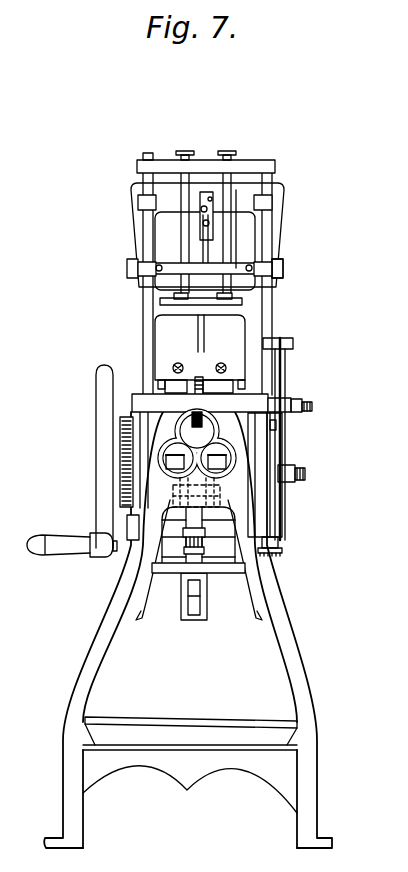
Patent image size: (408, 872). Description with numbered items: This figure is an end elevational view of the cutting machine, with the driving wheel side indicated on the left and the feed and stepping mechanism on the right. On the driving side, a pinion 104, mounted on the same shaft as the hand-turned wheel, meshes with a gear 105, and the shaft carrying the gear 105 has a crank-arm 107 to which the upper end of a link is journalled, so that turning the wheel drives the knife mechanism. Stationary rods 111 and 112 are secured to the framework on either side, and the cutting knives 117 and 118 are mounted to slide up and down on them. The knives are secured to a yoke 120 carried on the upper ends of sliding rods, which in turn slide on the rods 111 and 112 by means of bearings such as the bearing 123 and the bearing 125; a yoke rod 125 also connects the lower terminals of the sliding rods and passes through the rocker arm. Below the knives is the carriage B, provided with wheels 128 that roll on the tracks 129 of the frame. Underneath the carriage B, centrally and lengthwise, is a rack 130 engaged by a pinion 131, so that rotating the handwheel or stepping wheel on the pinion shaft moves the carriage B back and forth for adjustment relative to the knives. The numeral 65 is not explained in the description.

The yoke 120 is at (131, 185).
The bearing / yoke rod 125 is at (127, 267).
The cutting knife 118 is at (203, 237).
The cutting knife 117 is at (237, 268).
The bearing 123 is at (277, 263).
The rod 112 is at (141, 303).
The rod 111 is at (266, 308).
The plate 65 is at (205, 318).
The carriage B is at (160, 352).
The wheels 128 is at (162, 377).
The rack 130 is at (201, 377).
The pinion 131 is at (199, 386).
The tracks 129 is at (155, 383).
The crank-arm 107 is at (186, 462).
The pinion 104 is at (118, 472).
The gear 105 is at (121, 409).